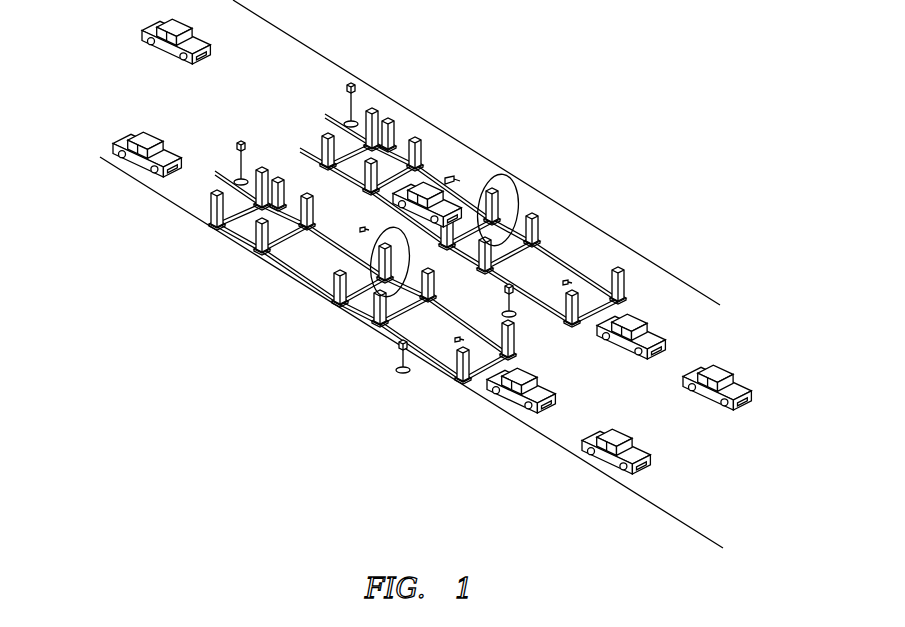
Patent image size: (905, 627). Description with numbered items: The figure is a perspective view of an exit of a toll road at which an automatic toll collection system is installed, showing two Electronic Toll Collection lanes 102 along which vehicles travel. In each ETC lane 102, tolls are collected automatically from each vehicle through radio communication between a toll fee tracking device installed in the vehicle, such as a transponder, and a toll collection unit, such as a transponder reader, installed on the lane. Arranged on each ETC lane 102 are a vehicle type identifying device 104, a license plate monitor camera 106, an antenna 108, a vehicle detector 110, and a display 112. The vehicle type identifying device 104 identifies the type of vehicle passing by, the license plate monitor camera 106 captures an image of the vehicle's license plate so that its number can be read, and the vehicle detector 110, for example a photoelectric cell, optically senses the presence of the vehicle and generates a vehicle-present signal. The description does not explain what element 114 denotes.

The Electronic Toll Collection lane 102 is at (512, 404).
The vehicle type identifying device 104 is at (455, 386).
The license plate monitor camera 106 is at (398, 352).
The antenna 108 is at (378, 270).
The vehicle detector 110 is at (326, 304).
The display 112 is at (308, 233).
The pillar 114 is at (272, 162).